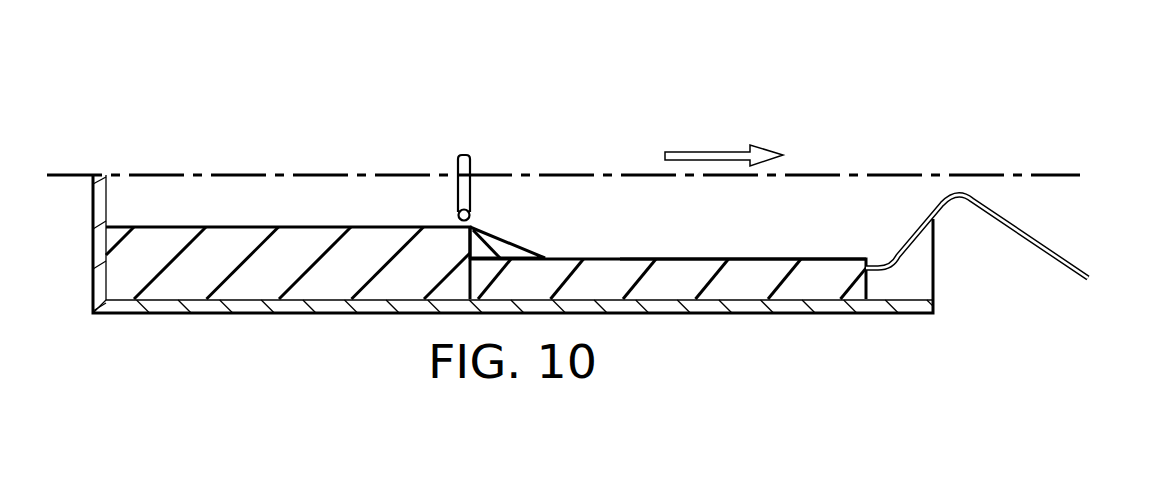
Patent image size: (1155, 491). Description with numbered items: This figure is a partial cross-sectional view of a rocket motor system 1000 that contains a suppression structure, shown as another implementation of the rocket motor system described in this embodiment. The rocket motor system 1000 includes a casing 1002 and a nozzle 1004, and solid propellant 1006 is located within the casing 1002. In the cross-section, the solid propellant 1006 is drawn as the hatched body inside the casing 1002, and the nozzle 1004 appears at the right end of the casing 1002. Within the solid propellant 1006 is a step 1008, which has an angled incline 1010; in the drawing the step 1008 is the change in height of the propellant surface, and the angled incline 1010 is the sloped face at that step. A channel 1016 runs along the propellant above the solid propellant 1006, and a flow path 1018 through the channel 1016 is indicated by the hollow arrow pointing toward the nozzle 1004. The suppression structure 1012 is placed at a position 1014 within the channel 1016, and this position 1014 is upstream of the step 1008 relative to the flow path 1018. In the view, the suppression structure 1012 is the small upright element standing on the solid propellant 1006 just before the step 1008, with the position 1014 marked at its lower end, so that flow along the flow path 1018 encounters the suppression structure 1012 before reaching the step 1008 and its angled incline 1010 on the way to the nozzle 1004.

The rocket motor system 1000 is at (645, 78).
The casing 1002 is at (290, 315).
The nozzle 1004 is at (1095, 232).
The solid propellant 1006 is at (738, 286).
The step 1008 is at (552, 223).
The angled incline 1010 is at (502, 238).
The suppression structure 1012 is at (457, 162).
The position 1014 is at (441, 216).
The channel 1016 is at (807, 233).
The flow path 1018 is at (707, 150).